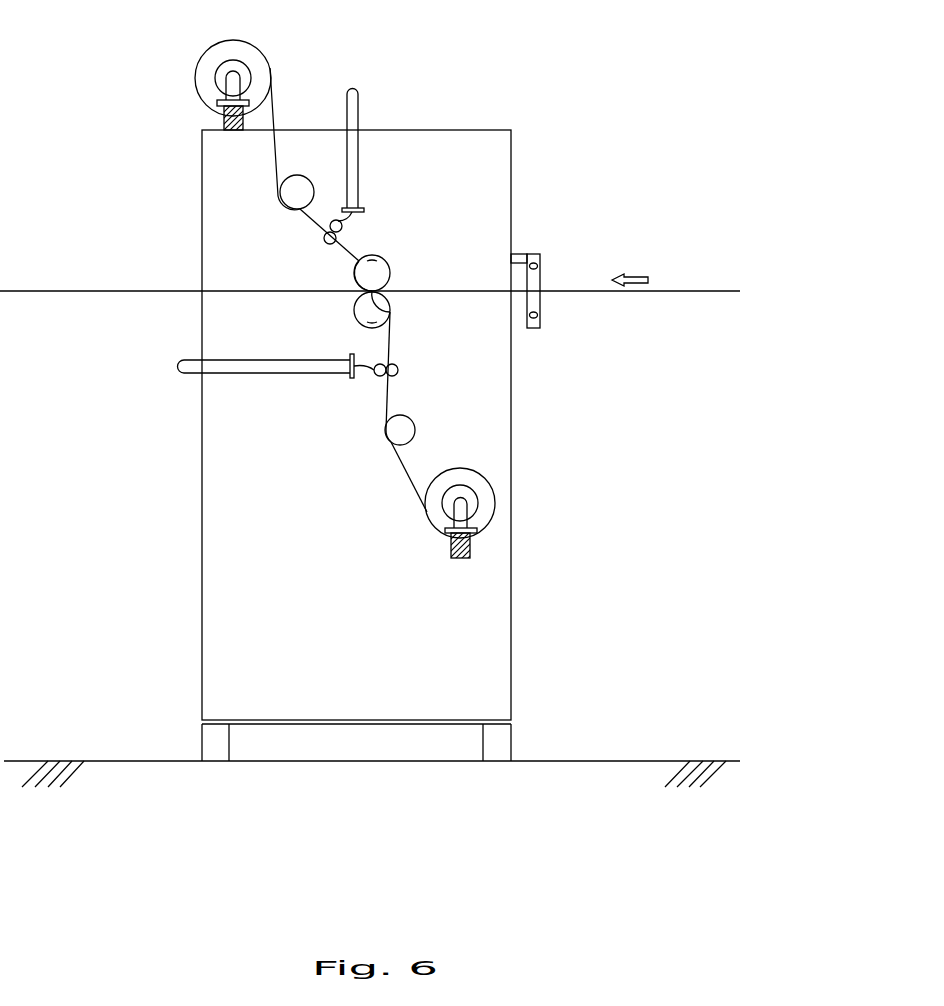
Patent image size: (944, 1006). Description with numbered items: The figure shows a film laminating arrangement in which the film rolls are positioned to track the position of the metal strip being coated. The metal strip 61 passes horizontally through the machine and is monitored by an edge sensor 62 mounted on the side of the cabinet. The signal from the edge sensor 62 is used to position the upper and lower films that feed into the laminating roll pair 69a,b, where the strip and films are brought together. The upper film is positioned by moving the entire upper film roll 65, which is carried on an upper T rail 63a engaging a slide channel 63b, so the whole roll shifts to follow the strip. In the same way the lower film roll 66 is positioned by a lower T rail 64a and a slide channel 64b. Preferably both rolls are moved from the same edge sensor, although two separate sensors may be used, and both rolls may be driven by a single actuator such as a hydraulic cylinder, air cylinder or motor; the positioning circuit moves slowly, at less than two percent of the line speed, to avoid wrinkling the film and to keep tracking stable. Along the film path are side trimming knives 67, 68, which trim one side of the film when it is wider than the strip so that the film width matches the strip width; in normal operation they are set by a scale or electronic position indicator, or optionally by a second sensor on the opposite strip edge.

The metal strip 61 is at (682, 290).
The edge sensor 62 is at (537, 254).
The upper T rail 63a is at (218, 104).
The upper slide channel 63b is at (224, 118).
The lower T rail 64a is at (477, 532).
The lower slide channel 64b is at (473, 553).
The upper film roll 65 is at (213, 37).
The lower film roll 66 is at (498, 494).
The side trimming knife 67 is at (410, 373).
The side trimming knife 68 is at (313, 237).
The laminating roll pair 69a,b is at (348, 315).